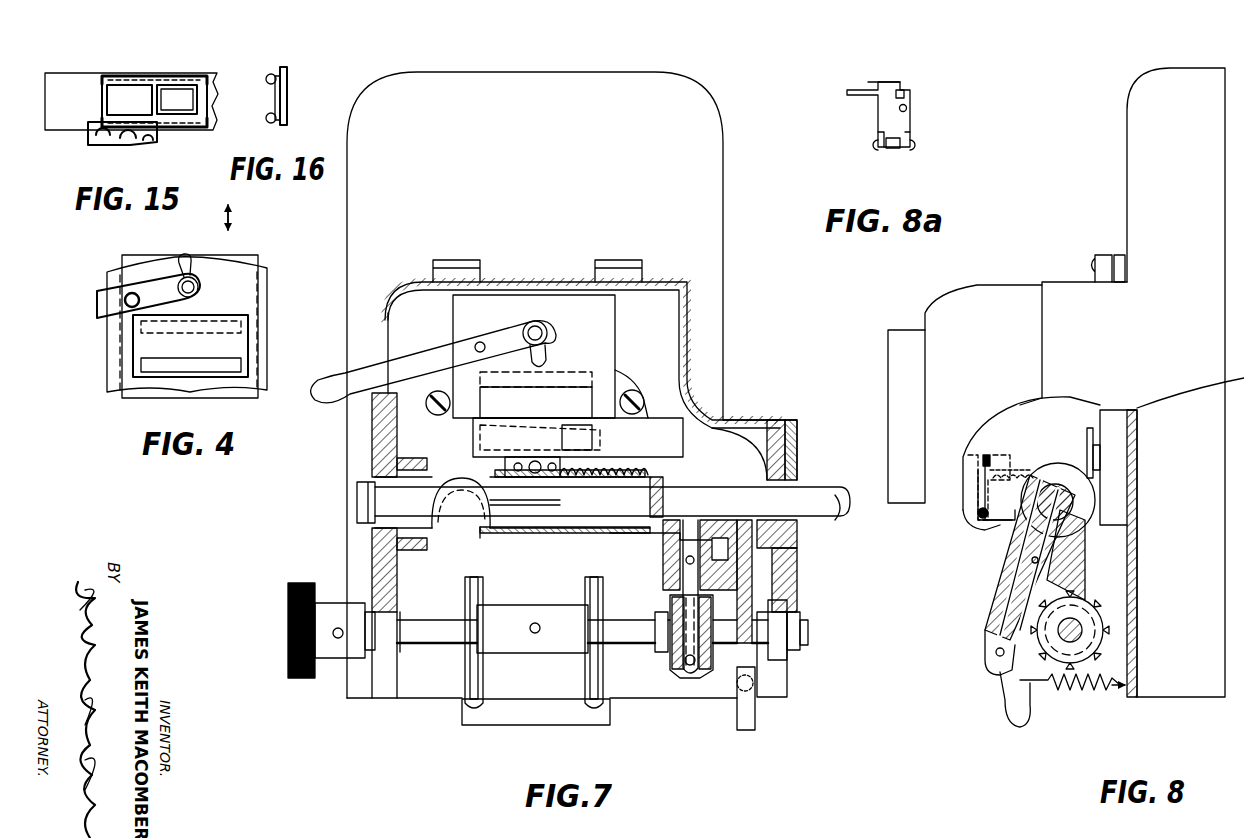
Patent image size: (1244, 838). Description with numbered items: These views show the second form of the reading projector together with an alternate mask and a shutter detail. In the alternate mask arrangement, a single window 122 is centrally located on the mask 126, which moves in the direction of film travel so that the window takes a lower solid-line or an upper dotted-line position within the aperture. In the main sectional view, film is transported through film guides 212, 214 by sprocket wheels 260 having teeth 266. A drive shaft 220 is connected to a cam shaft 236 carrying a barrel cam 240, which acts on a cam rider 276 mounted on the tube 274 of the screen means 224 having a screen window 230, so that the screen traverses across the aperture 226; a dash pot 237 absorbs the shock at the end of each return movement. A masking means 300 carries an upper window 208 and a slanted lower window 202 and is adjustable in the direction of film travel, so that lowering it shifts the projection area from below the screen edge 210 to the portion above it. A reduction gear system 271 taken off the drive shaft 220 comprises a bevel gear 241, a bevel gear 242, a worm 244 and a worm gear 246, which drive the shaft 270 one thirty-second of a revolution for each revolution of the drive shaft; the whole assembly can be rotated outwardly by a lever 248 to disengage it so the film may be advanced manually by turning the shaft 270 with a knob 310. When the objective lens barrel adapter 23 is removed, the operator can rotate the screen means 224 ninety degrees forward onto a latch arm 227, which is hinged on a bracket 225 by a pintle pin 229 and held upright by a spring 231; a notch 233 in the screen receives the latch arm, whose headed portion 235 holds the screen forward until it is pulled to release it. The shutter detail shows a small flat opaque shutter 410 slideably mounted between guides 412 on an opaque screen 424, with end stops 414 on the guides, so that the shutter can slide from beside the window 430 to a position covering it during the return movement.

In FIG. 8, the objective lens barrel adapter 23 is at (904, 330).
In FIG. 4, the window 122 is at (240, 365).
In FIG. 4, the window 126 is at (245, 340).
In FIG. 7, the lower window 202 is at (485, 436).
In FIG. 7, the upper window 208 is at (542, 370).
In FIG. 7, the screen edge 210 is at (498, 420).
In FIG. 8, the film guide 212 is at (1125, 265).
In FIG. 8, the film guide 214 is at (1105, 255).
In FIG. 7, the drive shaft 220 is at (835, 487).
In FIG. 8, the drive shaft 220 is at (1065, 465).
In FIG. 7, the screen means 224 is at (660, 440).
In FIG. 8A, the screen means 224 is at (906, 94).
In FIG. 8A, the bracket 225 is at (893, 148).
In FIG. 8, the bracket 225 is at (1008, 520).
In FIG. 7, the aperture 226 is at (590, 392).
In FIG. 8A, the latch arm 227 is at (880, 117).
In FIG. 8, the latch arm 227 is at (960, 495).
In FIG. 8A, the pintle pin 229 is at (875, 142).
In FIG. 8, the pintle pin 229 is at (978, 514).
In FIG. 7, the screen window 230 is at (592, 438).
In FIG. 8A, the spring 231 is at (908, 108).
In FIG. 8, the spring 231 is at (1005, 470).
In FIG. 7, the notch 233 is at (668, 418).
In FIG. 8A, the headed portion 235 is at (890, 82).
In FIG. 8, the headed portion 235 is at (985, 455).
In FIG. 7, the cam shaft 236 is at (425, 540).
In FIG. 7, the dash pot 237 is at (398, 545).
In FIG. 7, the barrel cam 240 is at (478, 508).
In FIG. 7, the bevel gear 241 is at (660, 468).
In FIG. 7, the bevel gear 242 is at (665, 555).
In FIG. 7, the worm 244 is at (690, 672).
In FIG. 8, the worm 244 is at (995, 652).
In FIG. 7, the worm gear 246 is at (672, 660).
In FIG. 8, the worm gear 246 is at (1090, 590).
In FIG. 7, the lever 248 is at (738, 748).
In FIG. 8, the lever 248 is at (1062, 709).
In FIG. 7, the sprocket wheels 260 is at (595, 680).
In FIG. 8, the sprocket wheels 260 is at (1108, 636).
In FIG. 8, the teeth 266 is at (1100, 593).
In FIG. 7, the shaft 270 is at (628, 620).
In FIG. 8, the reduction gear system 271 is at (985, 580).
In FIG. 7, the tube 274 is at (535, 535).
In FIG. 7, the cam rider 276 is at (525, 500).
In FIG. 7, the masking means 300 is at (557, 403).
In FIG. 7, the knob 310 is at (303, 583).
In FIG. 15, the shutter 410 is at (126, 85).
In FIG. 16, the shutter 410 is at (275, 100).
In FIG. 15, the guides 412 is at (180, 128).
In FIG. 16, the guides 412 is at (270, 118).
In FIG. 15, the end stops 414 is at (95, 75).
In FIG. 15, the screen 424 is at (68, 122).
In FIG. 16, the screen 424 is at (283, 67).
In FIG. 15, the window 430 is at (185, 90).
In FIG. 16, the window 430 is at (287, 98).